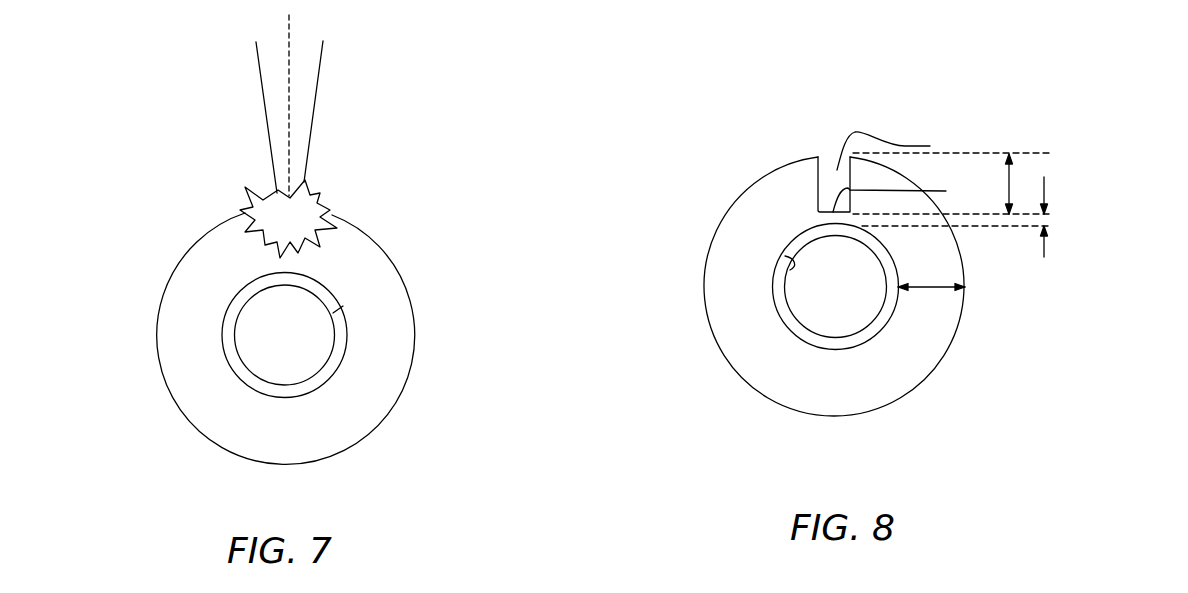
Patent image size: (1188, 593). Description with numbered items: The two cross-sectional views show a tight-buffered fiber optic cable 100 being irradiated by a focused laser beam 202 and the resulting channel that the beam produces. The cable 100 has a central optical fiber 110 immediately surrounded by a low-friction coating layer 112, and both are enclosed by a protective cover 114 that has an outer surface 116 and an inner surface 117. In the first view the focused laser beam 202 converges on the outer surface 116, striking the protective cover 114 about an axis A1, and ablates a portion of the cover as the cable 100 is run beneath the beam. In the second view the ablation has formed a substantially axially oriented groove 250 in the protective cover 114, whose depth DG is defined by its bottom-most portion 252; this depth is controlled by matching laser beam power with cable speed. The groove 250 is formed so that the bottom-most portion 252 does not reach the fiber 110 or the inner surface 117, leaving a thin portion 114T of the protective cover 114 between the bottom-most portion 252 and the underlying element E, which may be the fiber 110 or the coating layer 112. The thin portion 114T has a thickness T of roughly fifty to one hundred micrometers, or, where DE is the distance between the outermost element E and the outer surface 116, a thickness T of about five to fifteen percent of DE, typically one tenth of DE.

In FIG. 7, the fiber optic cable 100 is at (253, 322).
In FIG. 8, the fiber optic cable 100 is at (812, 274).
In FIG. 7, the optical fiber 110 is at (230, 342).
In FIG. 8, the optical fiber 110 is at (773, 290).
In FIG. 7, the low-friction coating layer 112 is at (230, 320).
In FIG. 8, the low-friction coating layer 112 is at (782, 303).
In FIG. 7, the protective cover 114 is at (253, 338).
In FIG. 8, the protective cover 114 is at (803, 286).
In FIG. 8, the thin portion 114T is at (830, 217).
In FIG. 7, the outer surface 116 is at (188, 278).
In FIG. 8, the outer surface 116 is at (746, 188).
In FIG. 7, the inner surface 117 is at (273, 335).
In FIG. 8, the inner surface 117 is at (743, 287).
In FIG. 7, the focused laser beam 202 is at (257, 121).
In FIG. 7, the beam axis / angle A1 is at (290, 50).
In FIG. 7, the element E is at (327, 272).
In FIG. 8, the element E is at (777, 317).
In FIG. 8, the groove 250 is at (903, 151).
In FIG. 8, the bottom-most portion 252 is at (908, 195).
In FIG. 8, the depth DG is at (1012, 183).
In FIG. 8, the thickness T is at (1045, 183).
In FIG. 8, the distance DE is at (930, 287).